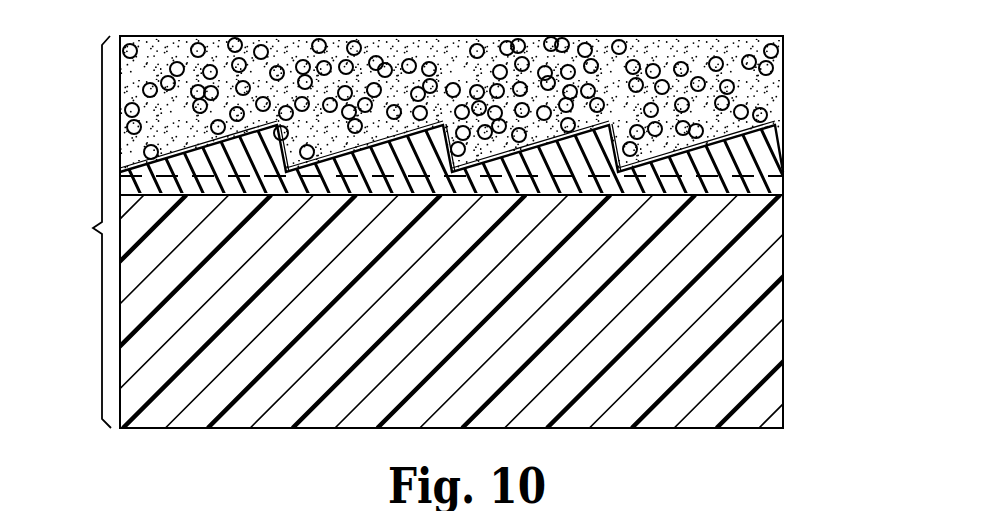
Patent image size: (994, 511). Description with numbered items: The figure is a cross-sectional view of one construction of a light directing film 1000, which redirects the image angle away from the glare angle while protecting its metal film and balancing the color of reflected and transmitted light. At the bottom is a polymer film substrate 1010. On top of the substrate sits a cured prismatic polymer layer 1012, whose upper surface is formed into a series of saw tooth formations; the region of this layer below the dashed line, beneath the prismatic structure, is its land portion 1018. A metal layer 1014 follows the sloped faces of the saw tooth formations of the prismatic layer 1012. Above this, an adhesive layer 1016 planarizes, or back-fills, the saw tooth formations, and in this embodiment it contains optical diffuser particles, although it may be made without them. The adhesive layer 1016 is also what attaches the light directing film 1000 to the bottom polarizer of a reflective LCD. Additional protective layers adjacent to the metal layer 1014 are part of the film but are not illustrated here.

The light directing film 1000 is at (406, 232).
The polymer film substrate 1010 is at (763, 312).
The cured prismatic polymer layer 1012 is at (773, 185).
The metal layer 1014 is at (780, 133).
The adhesive layer 1016 is at (767, 72).
The land portion 1018 is at (733, 193).